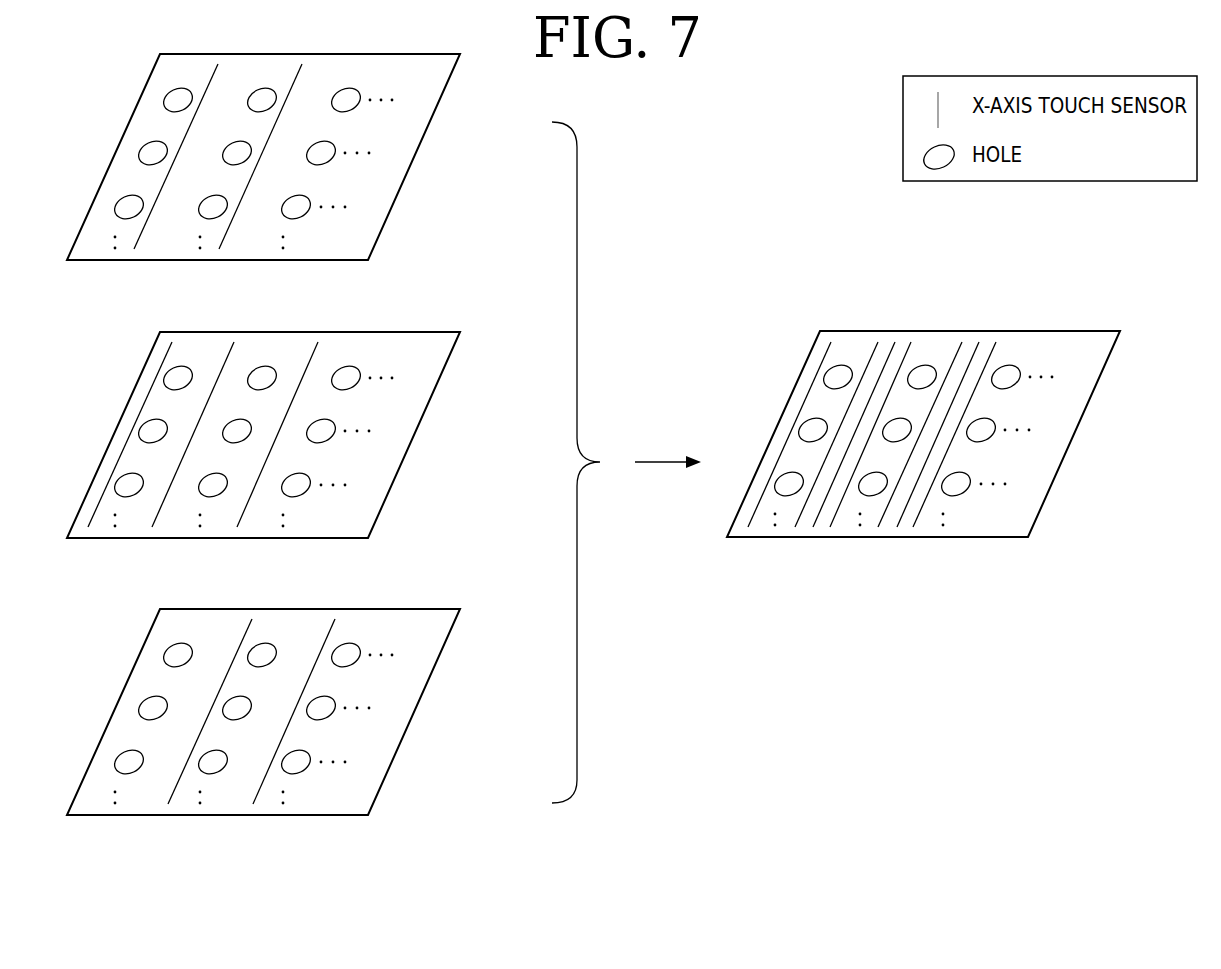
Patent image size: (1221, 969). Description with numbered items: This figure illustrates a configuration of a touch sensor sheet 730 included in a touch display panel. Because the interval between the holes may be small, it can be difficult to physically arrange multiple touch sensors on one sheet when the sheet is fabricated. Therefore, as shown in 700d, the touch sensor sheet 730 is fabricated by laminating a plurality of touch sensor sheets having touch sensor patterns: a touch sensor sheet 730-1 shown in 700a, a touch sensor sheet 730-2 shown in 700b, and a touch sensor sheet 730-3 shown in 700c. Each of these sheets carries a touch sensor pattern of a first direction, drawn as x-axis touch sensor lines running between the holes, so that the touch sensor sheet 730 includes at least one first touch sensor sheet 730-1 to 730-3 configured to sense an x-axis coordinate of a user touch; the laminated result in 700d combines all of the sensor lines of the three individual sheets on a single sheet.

The view of first touch sensor sheet 700a is at (307, 262).
The view of second touch sensor sheet 700b is at (263, 461).
The view of third touch sensor sheet 700c is at (263, 738).
The view of laminated touch sensor sheet 700d is at (923, 459).
The touch sensor sheet 730-1 is at (447, 83).
The touch sensor sheet 730-2 is at (305, 434).
The touch sensor sheet 730-3 is at (345, 711).
The touch sensor sheet 730 is at (955, 434).